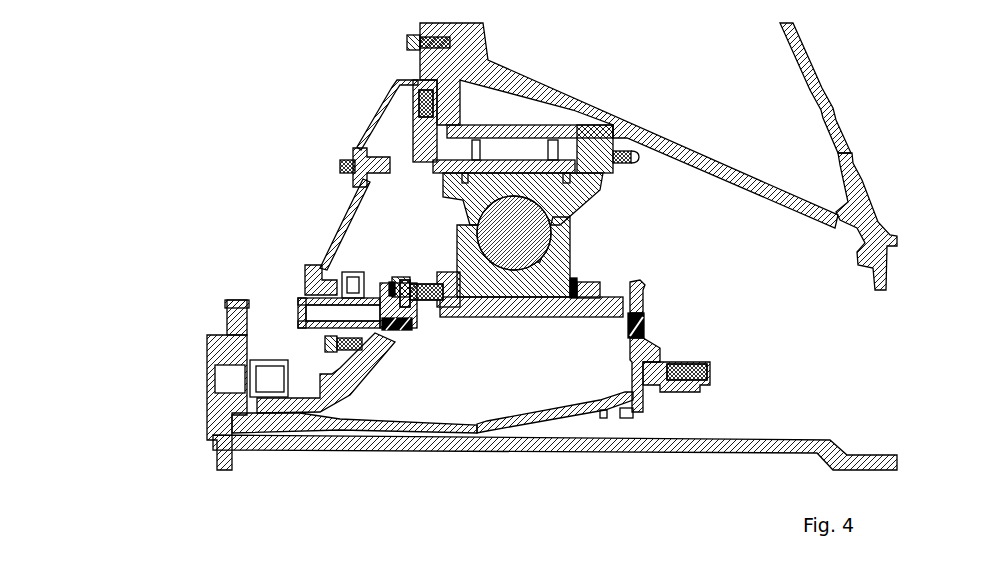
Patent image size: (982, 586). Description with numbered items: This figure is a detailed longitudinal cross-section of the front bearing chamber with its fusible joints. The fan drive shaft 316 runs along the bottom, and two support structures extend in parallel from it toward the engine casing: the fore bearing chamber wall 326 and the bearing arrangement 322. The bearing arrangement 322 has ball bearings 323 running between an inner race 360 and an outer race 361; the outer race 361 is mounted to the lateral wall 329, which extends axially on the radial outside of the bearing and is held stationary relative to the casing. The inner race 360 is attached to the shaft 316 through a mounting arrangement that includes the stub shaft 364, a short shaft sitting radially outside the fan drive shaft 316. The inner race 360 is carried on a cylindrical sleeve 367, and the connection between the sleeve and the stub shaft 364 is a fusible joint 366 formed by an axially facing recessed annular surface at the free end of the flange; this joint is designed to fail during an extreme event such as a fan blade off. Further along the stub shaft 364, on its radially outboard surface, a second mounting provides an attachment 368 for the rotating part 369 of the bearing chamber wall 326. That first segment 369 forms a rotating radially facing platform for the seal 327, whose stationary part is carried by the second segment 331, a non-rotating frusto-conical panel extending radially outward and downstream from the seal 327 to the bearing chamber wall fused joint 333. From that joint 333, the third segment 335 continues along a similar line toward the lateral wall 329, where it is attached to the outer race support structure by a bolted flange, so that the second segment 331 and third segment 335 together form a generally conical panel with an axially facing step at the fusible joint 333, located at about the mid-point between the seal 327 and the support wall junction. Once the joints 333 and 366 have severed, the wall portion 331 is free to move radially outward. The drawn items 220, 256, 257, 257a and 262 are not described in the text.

The bearing compartment 220 is at (688, 356).
The shaft / flange 256 is at (330, 392).
The seal support 257 is at (647, 300).
The seal support bracket 257a is at (648, 388).
The bolt 262 is at (418, 283).
The fan drive shaft 316 is at (700, 455).
The bearing arrangement 322 is at (652, 228).
The ball bearings 323 is at (516, 262).
The fore bearing chamber wall 326 is at (315, 176).
The seal 327 is at (288, 274).
The lateral wall 329 is at (645, 125).
The second segment of bearing chamber wall 331 is at (347, 207).
The bearing chamber wall fused joint 333 is at (355, 147).
The third segment of bearing chamber wall 335 is at (398, 81).
The inner race 360 is at (495, 298).
The outer race 361 is at (575, 205).
The stub shaft 364 is at (485, 430).
The fusible joint 366 is at (398, 274).
The cylindrical sleeve 367 is at (490, 300).
The attachment 368 is at (350, 346).
The first segment of bearing chamber wall 369 is at (320, 327).